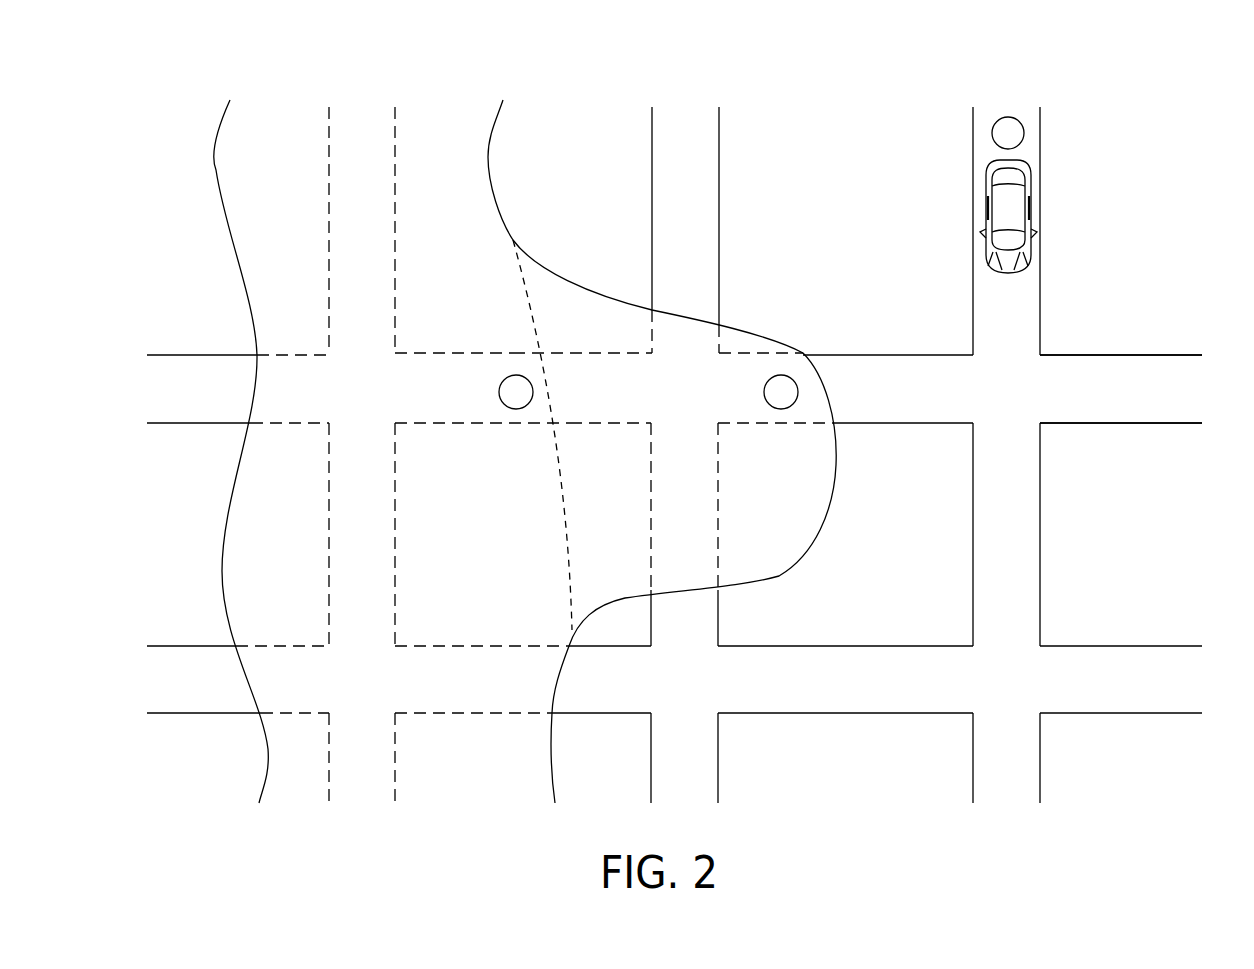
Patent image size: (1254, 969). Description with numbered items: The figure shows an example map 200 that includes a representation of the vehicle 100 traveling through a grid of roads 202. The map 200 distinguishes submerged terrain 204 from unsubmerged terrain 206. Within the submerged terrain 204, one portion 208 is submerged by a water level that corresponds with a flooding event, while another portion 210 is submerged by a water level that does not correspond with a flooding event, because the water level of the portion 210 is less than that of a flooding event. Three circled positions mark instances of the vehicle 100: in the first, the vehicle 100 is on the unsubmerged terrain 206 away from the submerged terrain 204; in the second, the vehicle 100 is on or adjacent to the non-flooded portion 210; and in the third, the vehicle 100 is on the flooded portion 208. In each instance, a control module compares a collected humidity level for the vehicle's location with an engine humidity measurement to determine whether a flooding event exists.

The vehicle 100 is at (1028, 212).
The map 200 is at (839, 90).
The roads 202 is at (1087, 397).
The submerged terrain 204 is at (458, 196).
The unsubmerged terrain 206 is at (592, 203).
The portion of the submerged terrain 208 is at (529, 502).
The another portion of the submerged terrain 210 is at (629, 502).